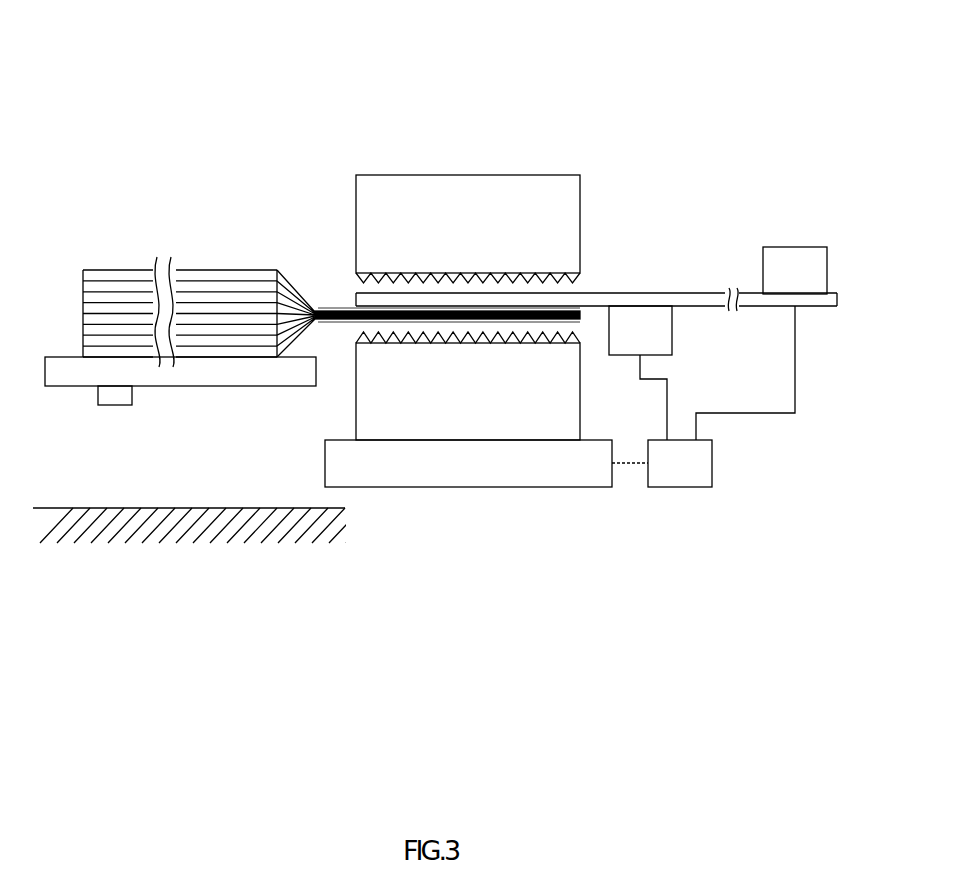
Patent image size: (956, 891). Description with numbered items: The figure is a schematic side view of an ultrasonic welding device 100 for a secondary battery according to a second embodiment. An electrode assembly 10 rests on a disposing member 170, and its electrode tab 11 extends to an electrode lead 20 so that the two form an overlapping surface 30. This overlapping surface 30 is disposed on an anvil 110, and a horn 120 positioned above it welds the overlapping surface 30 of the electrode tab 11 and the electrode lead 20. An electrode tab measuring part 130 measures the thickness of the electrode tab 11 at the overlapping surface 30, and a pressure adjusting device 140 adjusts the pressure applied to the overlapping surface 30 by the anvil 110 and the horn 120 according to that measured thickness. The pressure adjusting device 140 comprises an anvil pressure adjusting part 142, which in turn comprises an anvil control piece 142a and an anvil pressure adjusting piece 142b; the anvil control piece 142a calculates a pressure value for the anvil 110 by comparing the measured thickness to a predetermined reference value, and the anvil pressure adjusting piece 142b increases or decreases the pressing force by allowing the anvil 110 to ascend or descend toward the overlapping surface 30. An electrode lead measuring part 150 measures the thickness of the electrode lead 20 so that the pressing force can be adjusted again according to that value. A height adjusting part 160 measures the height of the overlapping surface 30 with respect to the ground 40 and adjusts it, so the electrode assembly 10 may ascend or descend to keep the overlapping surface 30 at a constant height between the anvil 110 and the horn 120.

The ultrasonic welding device 100 is at (384, 72).
The electrode assembly 10 is at (221, 270).
The electrode tab 11 is at (344, 322).
The electrode lead 20 is at (602, 293).
The overlapping surface 30 is at (502, 311).
The ground 40 is at (345, 522).
The anvil 110 is at (580, 396).
The horn 120 is at (356, 224).
The electrode tab measuring part 130 is at (668, 330).
The pressure adjusting device 140 is at (520, 546).
The anvil pressure adjusting part 142 is at (520, 521).
The anvil control piece 142a is at (681, 497).
The anvil pressure adjusting piece 142b is at (585, 490).
The electrode lead measuring part 150 is at (800, 248).
The height adjusting part 160 is at (132, 393).
The disposing member 170 is at (258, 386).